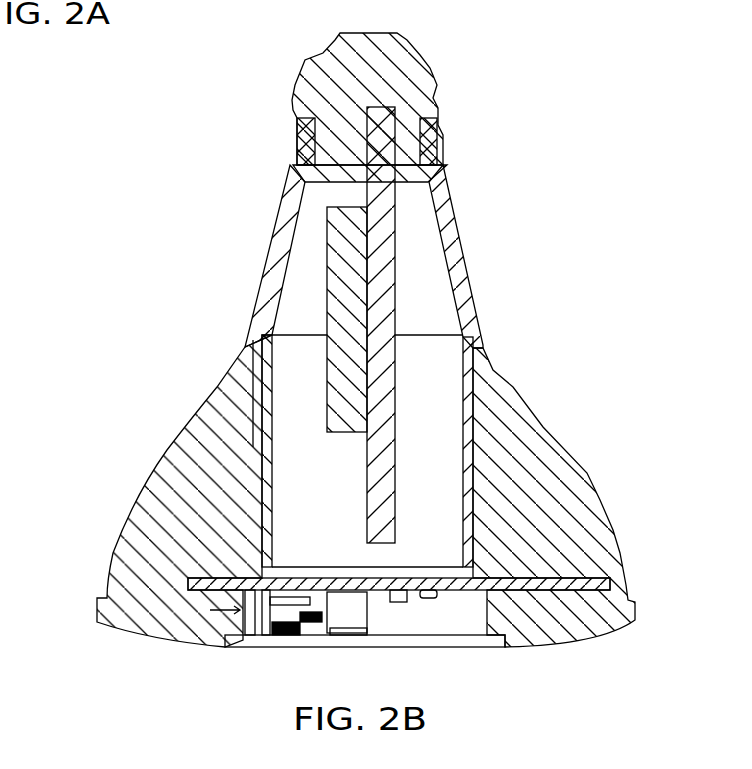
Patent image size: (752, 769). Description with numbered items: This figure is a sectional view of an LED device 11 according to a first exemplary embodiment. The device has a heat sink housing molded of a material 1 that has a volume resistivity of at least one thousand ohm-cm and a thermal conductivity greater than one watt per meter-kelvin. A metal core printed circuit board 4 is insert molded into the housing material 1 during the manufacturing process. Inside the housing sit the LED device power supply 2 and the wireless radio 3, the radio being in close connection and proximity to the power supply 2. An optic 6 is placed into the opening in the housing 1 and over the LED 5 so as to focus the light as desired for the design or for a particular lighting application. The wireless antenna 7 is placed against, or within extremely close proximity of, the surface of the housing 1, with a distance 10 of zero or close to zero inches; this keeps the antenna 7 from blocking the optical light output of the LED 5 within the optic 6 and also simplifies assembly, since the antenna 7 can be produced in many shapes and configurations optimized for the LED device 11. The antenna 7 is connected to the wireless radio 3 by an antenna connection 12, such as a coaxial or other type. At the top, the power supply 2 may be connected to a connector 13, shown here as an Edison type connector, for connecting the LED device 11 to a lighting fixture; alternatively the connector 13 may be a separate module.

The heat sink housing material 1 is at (513, 390).
The power supply 2 is at (392, 222).
The wireless radio 3 is at (330, 237).
The metal core printed circuit board 4 is at (537, 582).
The LED 5 is at (420, 592).
The optic 6 is at (470, 625).
The wireless antenna 7 is at (277, 620).
The distance 10 is at (240, 578).
The LED device 11 is at (642, 92).
The antenna connection 12 is at (333, 577).
The connector 13 is at (428, 58).